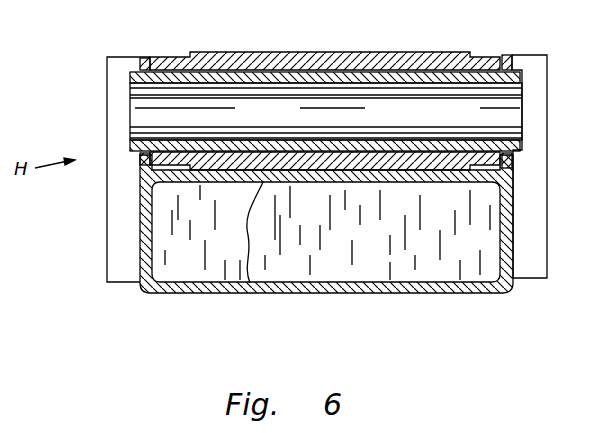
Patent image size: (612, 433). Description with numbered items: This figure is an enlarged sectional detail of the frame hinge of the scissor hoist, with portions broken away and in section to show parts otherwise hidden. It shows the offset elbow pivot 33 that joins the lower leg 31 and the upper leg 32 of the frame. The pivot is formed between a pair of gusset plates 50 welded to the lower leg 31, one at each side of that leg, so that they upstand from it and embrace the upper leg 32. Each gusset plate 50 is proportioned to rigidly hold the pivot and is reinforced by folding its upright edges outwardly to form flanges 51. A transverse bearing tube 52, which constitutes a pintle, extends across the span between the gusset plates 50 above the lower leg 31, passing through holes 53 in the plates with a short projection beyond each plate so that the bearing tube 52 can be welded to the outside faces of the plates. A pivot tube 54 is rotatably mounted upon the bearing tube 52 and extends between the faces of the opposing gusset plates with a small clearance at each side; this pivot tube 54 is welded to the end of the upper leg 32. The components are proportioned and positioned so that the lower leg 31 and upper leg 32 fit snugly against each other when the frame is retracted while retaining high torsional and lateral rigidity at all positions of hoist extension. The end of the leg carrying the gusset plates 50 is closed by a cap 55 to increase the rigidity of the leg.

The lower leg 31 is at (246, 230).
The upper leg 32 is at (250, 53).
The elbow pivot 33 is at (150, 121).
The gusset plate 50 is at (143, 212).
The flange 51 is at (122, 245).
The bearing tube 52 is at (512, 118).
The hole 53 is at (514, 169).
The pivot tube 54 is at (400, 62).
The cap 55 is at (415, 257).